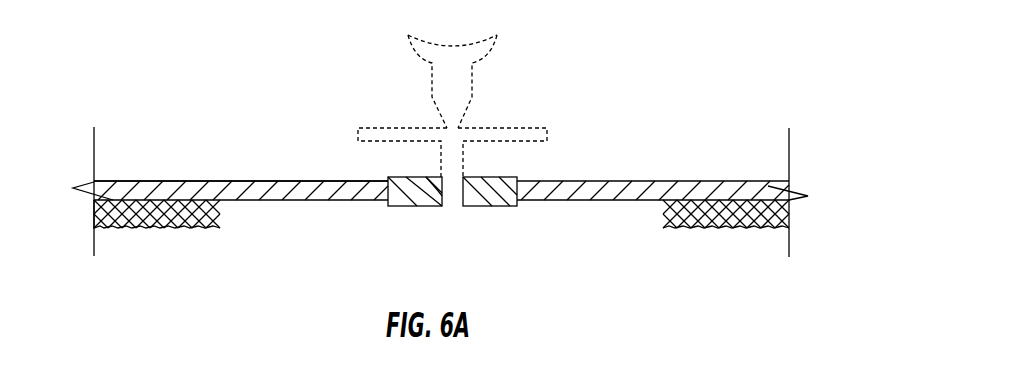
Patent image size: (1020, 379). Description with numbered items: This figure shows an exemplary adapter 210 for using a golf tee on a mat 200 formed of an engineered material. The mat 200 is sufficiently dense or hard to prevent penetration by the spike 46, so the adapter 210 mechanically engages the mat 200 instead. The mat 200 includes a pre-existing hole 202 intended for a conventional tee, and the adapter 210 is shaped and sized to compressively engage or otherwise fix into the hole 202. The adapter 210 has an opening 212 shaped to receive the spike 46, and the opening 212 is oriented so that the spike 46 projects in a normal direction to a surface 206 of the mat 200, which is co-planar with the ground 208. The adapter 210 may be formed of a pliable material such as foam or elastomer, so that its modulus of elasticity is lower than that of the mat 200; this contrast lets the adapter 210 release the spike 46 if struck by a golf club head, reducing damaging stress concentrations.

The spike 46 is at (462, 167).
The mat 200 is at (587, 201).
The pre-existing hole 202 is at (400, 186).
The surface 206 is at (172, 181).
The ground 208 is at (190, 206).
The adapter 210 is at (497, 198).
The opening 212 is at (440, 192).